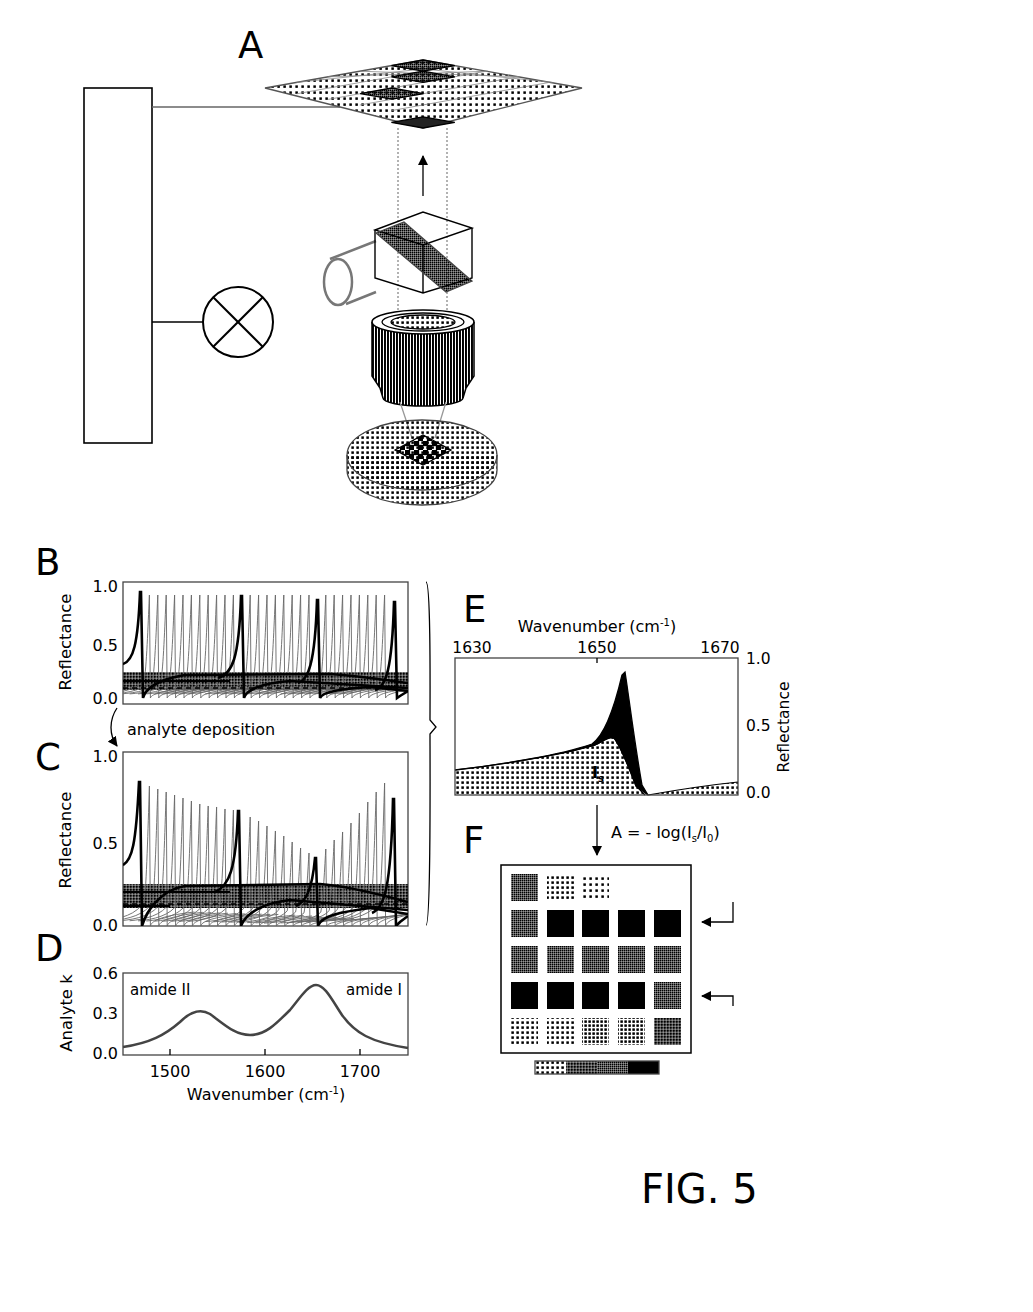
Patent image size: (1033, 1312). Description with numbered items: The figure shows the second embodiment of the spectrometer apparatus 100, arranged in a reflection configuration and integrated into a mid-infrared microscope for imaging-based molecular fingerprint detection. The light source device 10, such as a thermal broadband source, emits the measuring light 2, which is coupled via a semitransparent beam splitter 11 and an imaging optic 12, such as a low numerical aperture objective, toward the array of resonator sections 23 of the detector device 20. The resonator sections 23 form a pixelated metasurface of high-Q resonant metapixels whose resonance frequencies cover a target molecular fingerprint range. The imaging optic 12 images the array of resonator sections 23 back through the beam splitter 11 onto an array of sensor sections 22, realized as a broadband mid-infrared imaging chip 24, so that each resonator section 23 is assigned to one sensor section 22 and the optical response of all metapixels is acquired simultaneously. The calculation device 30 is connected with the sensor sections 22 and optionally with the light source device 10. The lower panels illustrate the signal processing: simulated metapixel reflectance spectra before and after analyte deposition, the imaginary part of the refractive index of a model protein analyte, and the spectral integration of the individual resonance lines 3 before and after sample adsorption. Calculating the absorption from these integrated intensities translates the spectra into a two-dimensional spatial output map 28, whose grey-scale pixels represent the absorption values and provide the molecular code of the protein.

The spectrometer apparatus 100 is at (296, 185).
The calculation device 30 is at (110, 106).
The light source device 10 is at (221, 291).
The measuring light 2 is at (337, 286).
The detector device 20 is at (633, 87).
The imaging chip 24 is at (466, 92).
The sensor sections 22 is at (552, 88).
The beam splitter 11 is at (460, 248).
The imaging optic 12 is at (455, 355).
The resonator sections 23 is at (450, 450).
The resonance lines 3 is at (630, 705).
The spatial output map 28 is at (500, 1020).